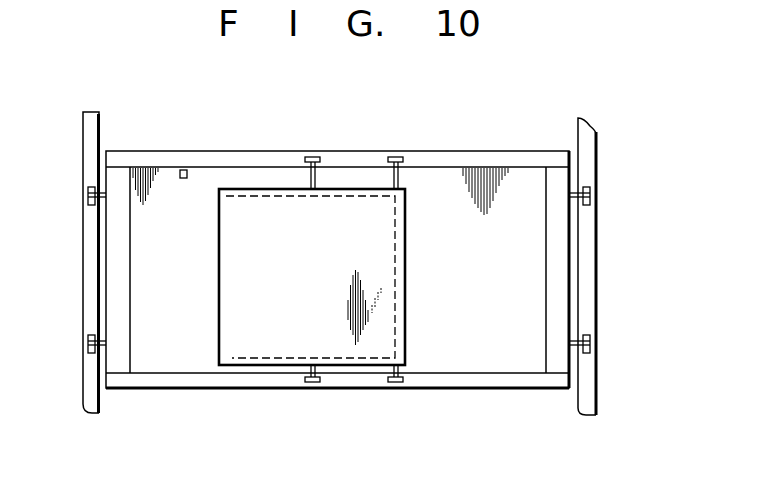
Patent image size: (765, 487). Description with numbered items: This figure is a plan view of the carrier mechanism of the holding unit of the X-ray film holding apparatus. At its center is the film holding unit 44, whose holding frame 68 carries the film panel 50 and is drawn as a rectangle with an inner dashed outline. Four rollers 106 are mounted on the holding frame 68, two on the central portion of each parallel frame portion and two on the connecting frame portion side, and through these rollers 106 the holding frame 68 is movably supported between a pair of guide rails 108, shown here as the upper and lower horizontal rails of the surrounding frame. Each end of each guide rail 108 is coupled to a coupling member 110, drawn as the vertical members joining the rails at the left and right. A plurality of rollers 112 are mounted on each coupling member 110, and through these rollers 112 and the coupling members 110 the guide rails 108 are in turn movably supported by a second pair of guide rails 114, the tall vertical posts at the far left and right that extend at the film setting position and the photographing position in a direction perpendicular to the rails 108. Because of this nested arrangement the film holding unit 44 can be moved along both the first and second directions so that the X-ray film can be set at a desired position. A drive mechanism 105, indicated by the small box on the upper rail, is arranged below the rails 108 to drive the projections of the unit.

The film holding unit 44 is at (214, 343).
The panel 50 is at (380, 329).
The holding frame 68 is at (240, 197).
The drive mechanism 105 is at (183, 170).
The rollers 106 is at (322, 158).
The guide rails 108 is at (500, 157).
The coupling member 110 is at (126, 322).
The rollers 112 is at (86, 195).
The guide rails 114 is at (88, 387).